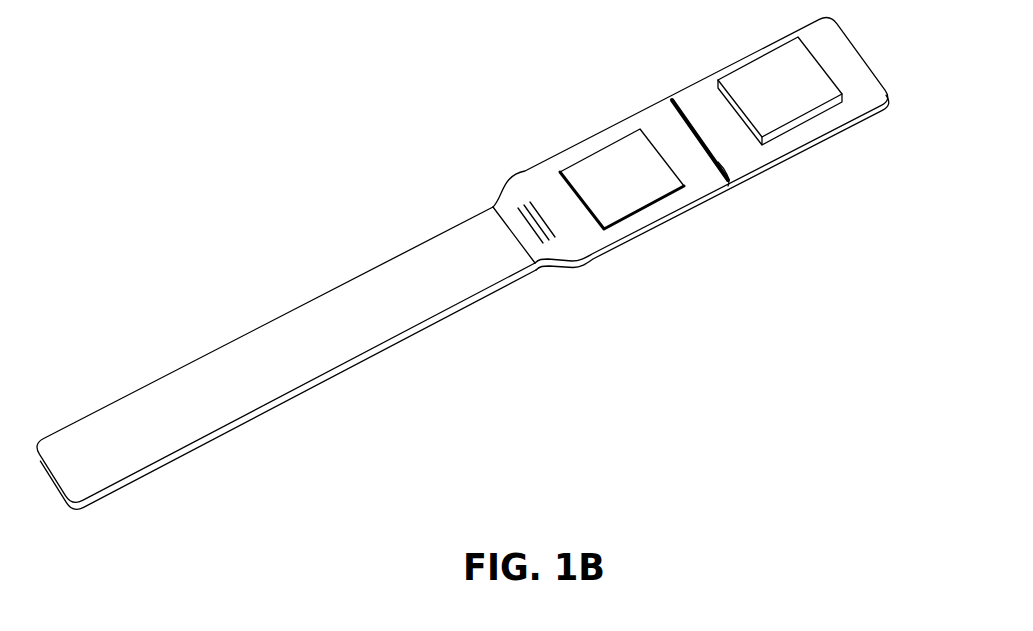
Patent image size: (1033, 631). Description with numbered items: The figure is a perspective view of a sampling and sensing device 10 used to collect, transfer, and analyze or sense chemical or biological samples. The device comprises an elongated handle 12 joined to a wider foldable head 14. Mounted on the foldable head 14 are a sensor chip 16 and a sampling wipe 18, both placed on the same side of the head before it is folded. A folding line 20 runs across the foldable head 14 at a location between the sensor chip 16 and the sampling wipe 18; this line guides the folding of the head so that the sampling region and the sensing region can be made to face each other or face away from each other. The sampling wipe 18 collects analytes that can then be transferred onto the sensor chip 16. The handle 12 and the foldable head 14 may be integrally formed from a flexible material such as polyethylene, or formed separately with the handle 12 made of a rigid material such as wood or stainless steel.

The sampling and sensing device 10 is at (463, 263).
The handle 12 is at (347, 308).
The foldable head 14 is at (532, 187).
The sensor chip 16 is at (615, 160).
The sampling wipe 18 is at (747, 98).
The folding line 20 is at (726, 182).